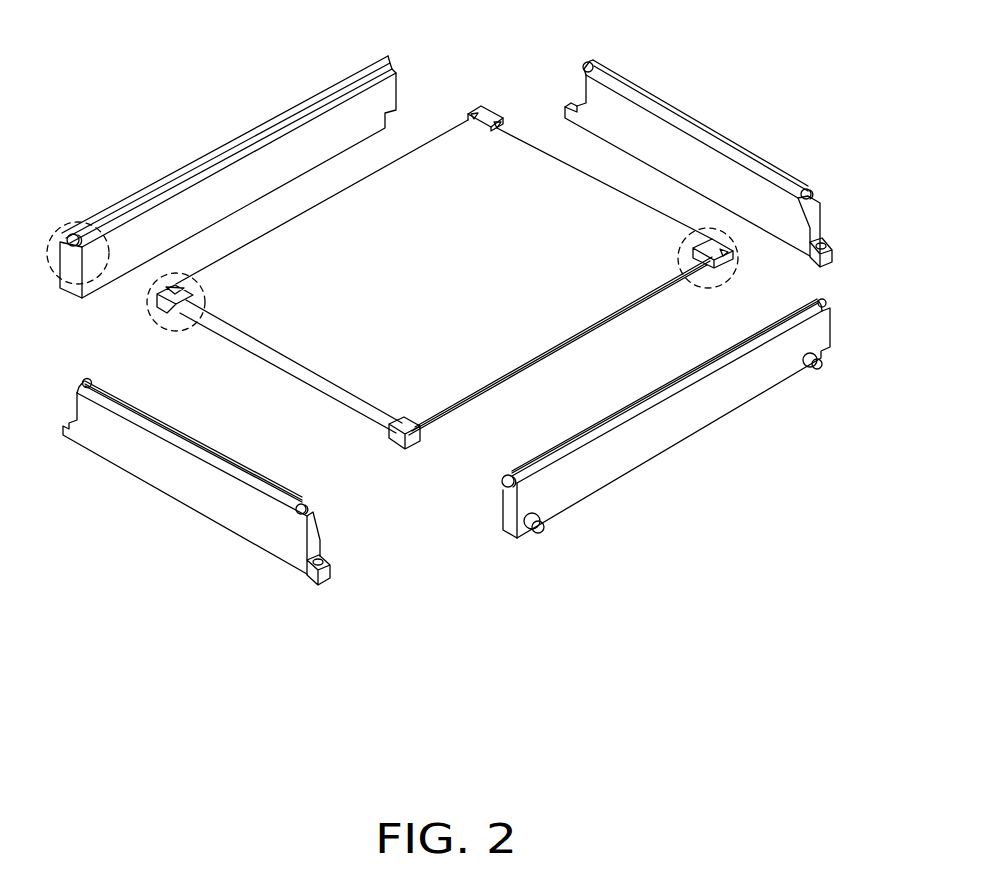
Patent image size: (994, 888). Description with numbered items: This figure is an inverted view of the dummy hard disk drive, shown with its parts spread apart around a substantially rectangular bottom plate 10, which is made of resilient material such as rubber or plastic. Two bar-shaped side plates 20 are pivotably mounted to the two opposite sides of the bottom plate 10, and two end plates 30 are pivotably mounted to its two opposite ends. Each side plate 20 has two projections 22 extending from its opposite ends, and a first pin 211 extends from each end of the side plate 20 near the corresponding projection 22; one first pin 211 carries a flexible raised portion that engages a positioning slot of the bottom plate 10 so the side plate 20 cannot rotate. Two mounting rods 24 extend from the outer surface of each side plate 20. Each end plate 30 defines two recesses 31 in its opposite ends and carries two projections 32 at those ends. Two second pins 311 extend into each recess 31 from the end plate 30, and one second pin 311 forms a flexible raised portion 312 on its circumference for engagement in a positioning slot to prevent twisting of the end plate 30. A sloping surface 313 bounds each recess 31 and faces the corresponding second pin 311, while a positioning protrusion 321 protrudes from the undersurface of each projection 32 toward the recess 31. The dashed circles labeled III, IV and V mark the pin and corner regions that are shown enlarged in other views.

The bottom plate 10 is at (469, 167).
The side plate 20 is at (235, 185).
The first pin 211 is at (76, 248).
The projection 22 is at (500, 507).
The mounting rod 24 is at (820, 370).
The end plate 30 is at (648, 137).
The recess 31 is at (795, 204).
The second pin 311 is at (810, 192).
The flexible raised portion 312 is at (298, 512).
The sloping surface 313 is at (807, 222).
The projection 32 is at (330, 568).
The positioning protrusion 321 is at (318, 568).
The detail view III is at (70, 222).
The detail view IV is at (190, 331).
The detail view V is at (680, 288).